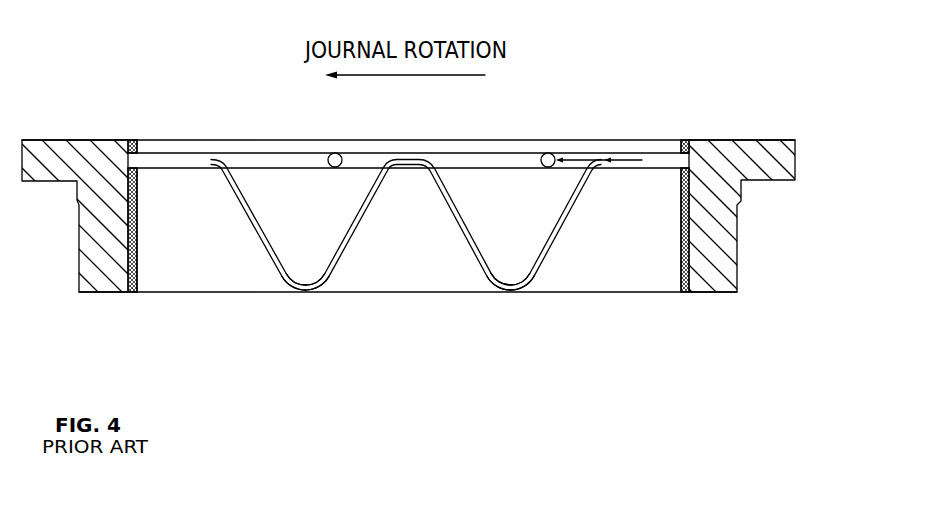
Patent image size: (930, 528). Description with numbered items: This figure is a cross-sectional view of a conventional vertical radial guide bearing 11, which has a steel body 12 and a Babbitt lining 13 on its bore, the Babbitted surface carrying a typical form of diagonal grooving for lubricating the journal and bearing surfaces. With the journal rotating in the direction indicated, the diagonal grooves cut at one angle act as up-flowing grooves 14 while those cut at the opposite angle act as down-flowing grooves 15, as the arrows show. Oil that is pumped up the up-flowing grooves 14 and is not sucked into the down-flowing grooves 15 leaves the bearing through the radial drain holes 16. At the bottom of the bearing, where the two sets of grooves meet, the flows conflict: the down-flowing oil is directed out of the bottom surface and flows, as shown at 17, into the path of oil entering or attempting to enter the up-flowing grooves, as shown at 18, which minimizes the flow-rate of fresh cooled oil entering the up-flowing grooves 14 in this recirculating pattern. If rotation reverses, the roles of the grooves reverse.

The vertical radial guide bearing 11 is at (668, 128).
The steel body 12 is at (755, 141).
The Babbitt lining 13 is at (683, 283).
The up-flowing grooves 14 is at (242, 192).
The down-flowing grooves 15 is at (344, 258).
The radial drain holes 16 is at (341, 151).
The down-flowing oil flow 17 is at (324, 301).
The oil entering up-flowing grooves 18 is at (289, 307).